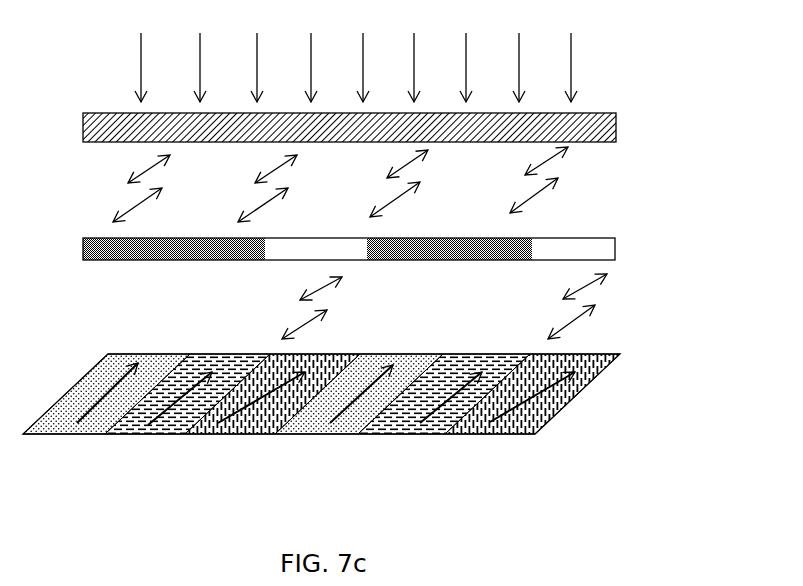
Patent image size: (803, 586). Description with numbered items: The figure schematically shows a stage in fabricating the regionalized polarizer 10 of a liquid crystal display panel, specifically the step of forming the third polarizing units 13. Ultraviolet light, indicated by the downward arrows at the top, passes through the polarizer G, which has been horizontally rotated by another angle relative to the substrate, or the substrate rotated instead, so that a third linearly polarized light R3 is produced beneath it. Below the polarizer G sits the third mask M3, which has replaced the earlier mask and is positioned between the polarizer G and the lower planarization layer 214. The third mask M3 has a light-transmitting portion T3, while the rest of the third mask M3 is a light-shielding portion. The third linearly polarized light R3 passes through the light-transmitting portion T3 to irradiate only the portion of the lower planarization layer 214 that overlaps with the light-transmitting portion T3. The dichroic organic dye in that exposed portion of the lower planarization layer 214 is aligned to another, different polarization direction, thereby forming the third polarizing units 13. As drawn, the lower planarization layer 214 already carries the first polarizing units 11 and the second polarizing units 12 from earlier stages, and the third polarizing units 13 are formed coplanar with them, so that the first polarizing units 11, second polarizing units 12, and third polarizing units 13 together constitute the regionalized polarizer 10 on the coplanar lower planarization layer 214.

The polarizer G is at (588, 118).
The third linearly polarized light R3 is at (578, 188).
The third mask M3 is at (598, 248).
The light-transmitting portion T3 is at (444, 274).
The regionalized polarizer 10 is at (388, 400).
The lower planarization layer 214 is at (388, 400).
The first polarizing units 11 is at (330, 408).
The second polarizing units 12 is at (432, 405).
The third polarizing units 13 is at (502, 400).